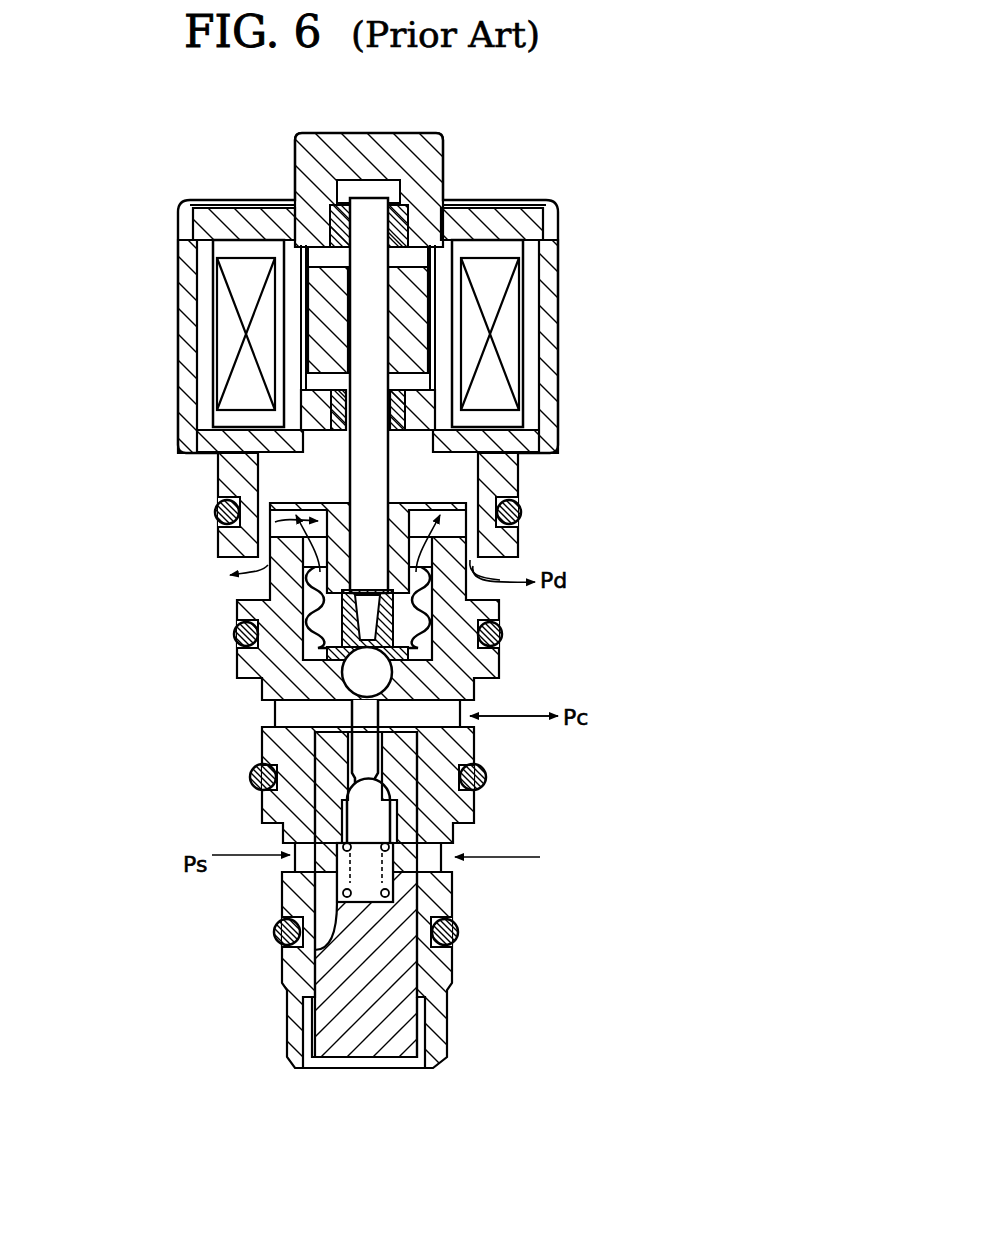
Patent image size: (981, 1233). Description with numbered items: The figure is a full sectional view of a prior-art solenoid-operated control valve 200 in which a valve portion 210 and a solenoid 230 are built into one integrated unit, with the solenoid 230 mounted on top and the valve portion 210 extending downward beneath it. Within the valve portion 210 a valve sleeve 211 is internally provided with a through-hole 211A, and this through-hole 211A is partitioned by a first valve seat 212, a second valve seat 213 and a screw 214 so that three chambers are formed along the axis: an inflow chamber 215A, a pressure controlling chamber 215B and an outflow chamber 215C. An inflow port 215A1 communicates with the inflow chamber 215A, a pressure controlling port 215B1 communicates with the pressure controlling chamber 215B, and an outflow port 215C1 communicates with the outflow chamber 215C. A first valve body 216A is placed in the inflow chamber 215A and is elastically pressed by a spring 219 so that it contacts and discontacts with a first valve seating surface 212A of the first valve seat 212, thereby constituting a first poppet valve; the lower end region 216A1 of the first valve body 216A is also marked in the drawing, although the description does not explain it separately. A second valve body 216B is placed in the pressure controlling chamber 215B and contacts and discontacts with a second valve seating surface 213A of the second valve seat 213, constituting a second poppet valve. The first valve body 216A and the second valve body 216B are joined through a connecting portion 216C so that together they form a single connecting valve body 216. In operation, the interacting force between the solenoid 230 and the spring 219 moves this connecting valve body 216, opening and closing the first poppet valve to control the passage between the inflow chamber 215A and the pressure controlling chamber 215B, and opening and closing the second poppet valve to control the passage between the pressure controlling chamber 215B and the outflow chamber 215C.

The control valve 200 is at (572, 187).
The solenoid 230 is at (567, 305).
The valve portion 210 is at (467, 963).
The valve sleeve 211 is at (470, 805).
The through-hole 211A is at (485, 780).
The first valve seat 212 is at (350, 787).
The first valve seating surface 212A is at (313, 850).
The second valve seat 213 is at (396, 655).
The second valve seating surface 213A is at (265, 665).
The screw 214 is at (355, 983).
The inflow chamber 215A is at (370, 882).
The inflow port 215A1 is at (445, 862).
The pressure controlling chamber 215B is at (390, 695).
The pressure controlling port 215B1 is at (446, 720).
The outflow chamber 215C is at (470, 478).
The outflow port 215C1 is at (262, 478).
The connecting valve body 216 is at (352, 750).
The first valve body 216A is at (348, 798).
The valve element lower end 216A1 is at (360, 900).
The second valve body 216B is at (360, 677).
The connecting portion 216C is at (300, 710).
The spring 219 is at (337, 882).